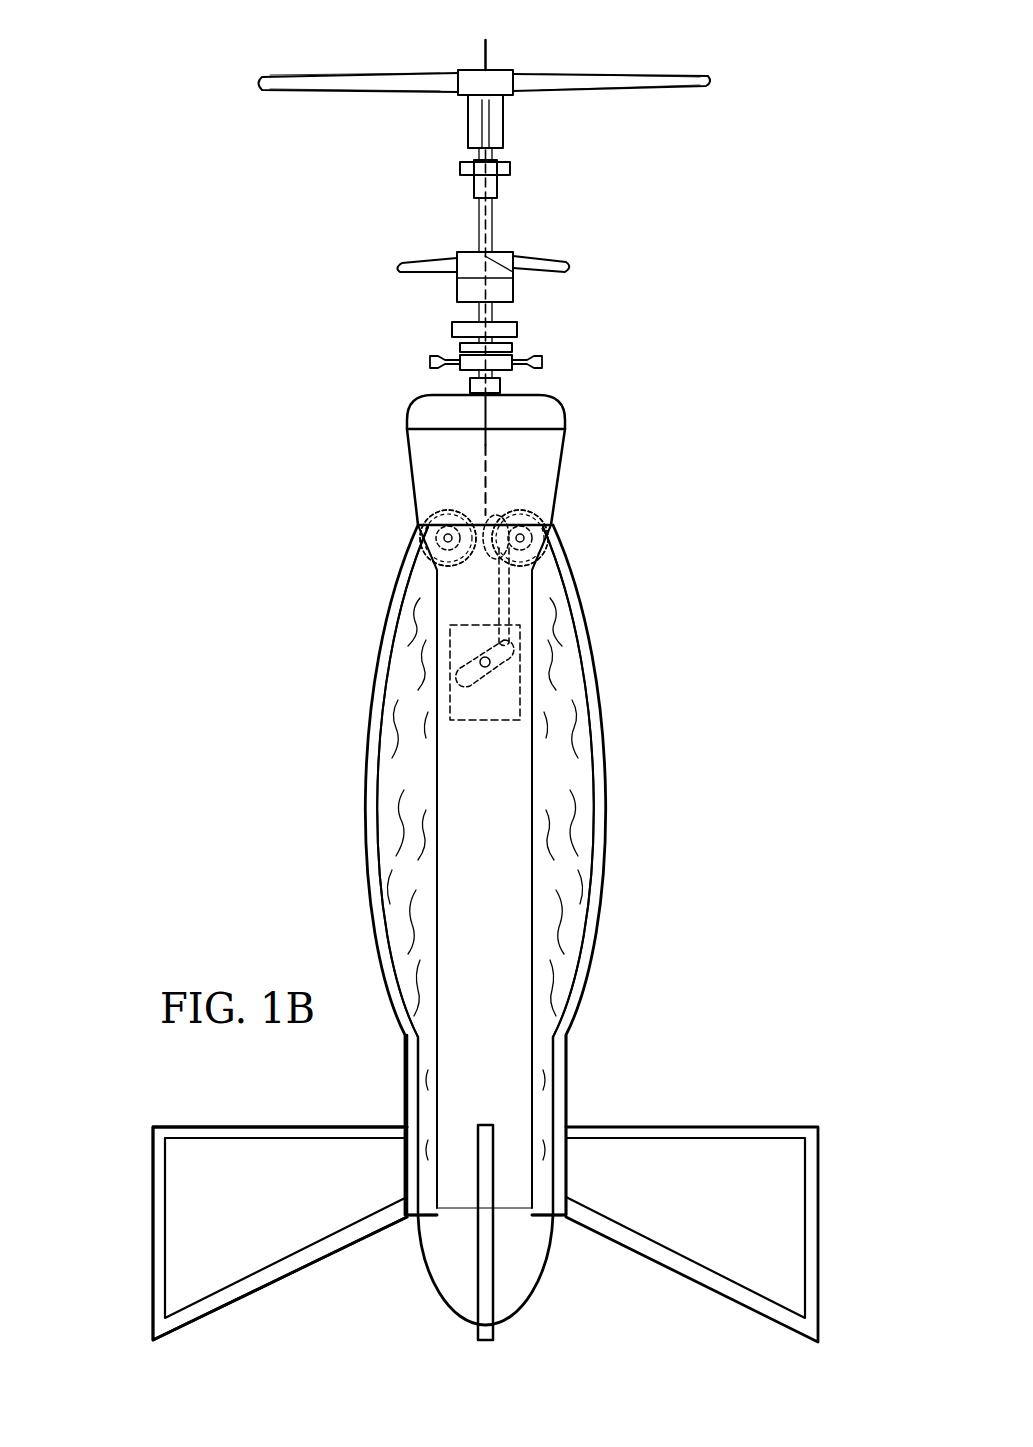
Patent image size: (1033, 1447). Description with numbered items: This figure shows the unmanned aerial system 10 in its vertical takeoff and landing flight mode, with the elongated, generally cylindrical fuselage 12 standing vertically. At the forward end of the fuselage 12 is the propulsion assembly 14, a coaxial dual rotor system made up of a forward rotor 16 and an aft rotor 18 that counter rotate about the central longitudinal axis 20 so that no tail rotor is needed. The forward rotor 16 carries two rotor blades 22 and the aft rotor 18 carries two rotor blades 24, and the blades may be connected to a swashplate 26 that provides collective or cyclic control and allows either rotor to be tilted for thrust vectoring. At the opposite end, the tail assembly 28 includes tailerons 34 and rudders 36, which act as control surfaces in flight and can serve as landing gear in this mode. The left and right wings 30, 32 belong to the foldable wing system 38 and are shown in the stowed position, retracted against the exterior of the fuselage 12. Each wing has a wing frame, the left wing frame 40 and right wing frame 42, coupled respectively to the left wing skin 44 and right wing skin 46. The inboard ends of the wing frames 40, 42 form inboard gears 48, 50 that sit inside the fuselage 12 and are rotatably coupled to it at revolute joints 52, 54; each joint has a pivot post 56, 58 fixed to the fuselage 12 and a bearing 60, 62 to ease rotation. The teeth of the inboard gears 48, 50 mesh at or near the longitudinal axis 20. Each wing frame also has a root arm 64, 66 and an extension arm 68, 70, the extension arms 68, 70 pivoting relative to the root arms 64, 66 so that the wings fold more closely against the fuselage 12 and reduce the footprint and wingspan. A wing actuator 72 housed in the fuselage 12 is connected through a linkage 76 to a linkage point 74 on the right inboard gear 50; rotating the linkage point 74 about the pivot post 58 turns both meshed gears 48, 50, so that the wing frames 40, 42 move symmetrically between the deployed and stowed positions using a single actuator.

The unmanned aerial system 10 is at (194, 55).
The fuselage 12 is at (407, 456).
The propulsion assembly 14 is at (282, 268).
The forward rotor 16 is at (466, 70).
The aft rotor 18 is at (466, 250).
The central longitudinal axis 20 is at (491, 52).
The rotor blades 22 is at (614, 68).
The rotor blades 24 is at (546, 254).
The swashplate 26 is at (419, 352).
The tail assembly 28 is at (118, 1202).
The left wing 30 is at (366, 722).
The right wing 32 is at (609, 722).
The tailerons 34 is at (184, 1246).
The rudders 36 is at (479, 1304).
The foldable wing system 38 is at (584, 516).
The left wing frame 40 is at (366, 792).
The right wing frame 42 is at (610, 792).
The left wing skin 44 is at (394, 906).
The right wing skin 46 is at (582, 906).
The left inboard gear 48 is at (460, 508).
The right inboard gear 50 is at (520, 500).
The revolute joint 52 is at (444, 520).
The revolute joint 54 is at (540, 518).
The pivot post 56 is at (444, 566).
The pivot post 58 is at (527, 566).
The bearing 60 is at (436, 541).
The bearing 62 is at (534, 541).
The root arm 64 is at (402, 871).
The root arm 66 is at (568, 871).
The extension arm 68 is at (406, 1104).
The extension arm 70 is at (566, 1104).
The wing actuator 72 is at (488, 723).
The linkage point 74 is at (503, 510).
The linkage 76 is at (510, 600).